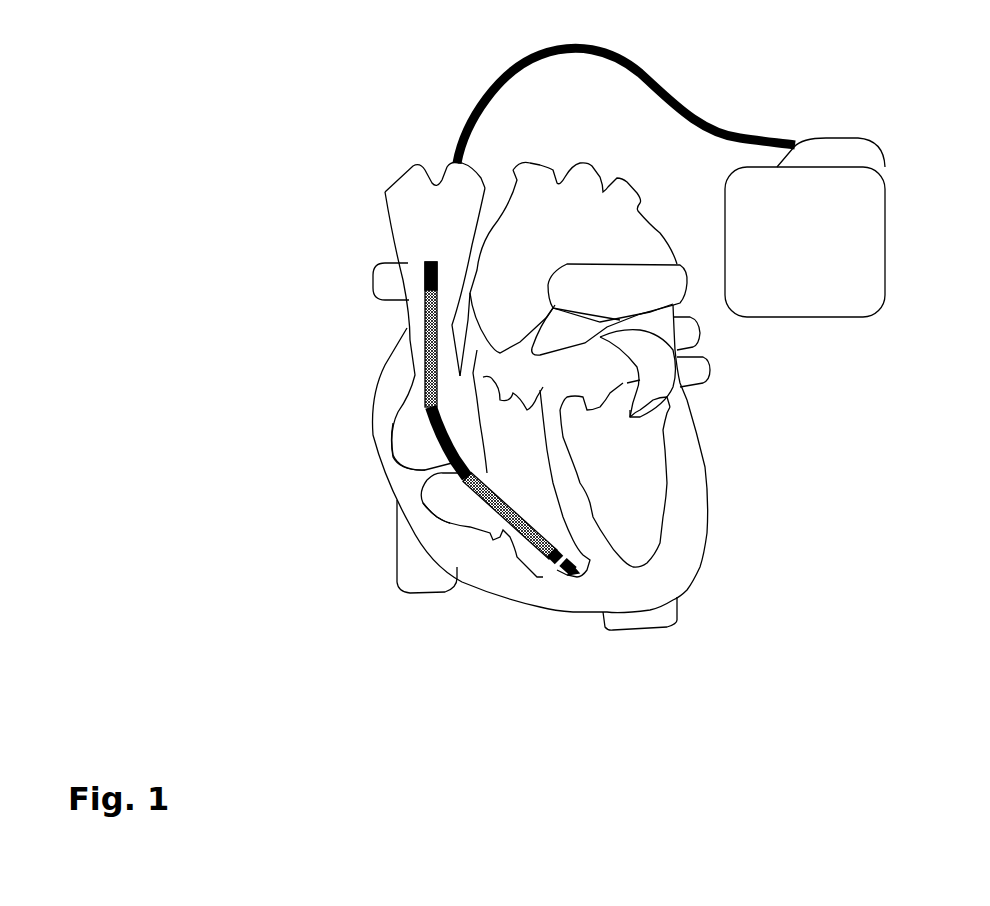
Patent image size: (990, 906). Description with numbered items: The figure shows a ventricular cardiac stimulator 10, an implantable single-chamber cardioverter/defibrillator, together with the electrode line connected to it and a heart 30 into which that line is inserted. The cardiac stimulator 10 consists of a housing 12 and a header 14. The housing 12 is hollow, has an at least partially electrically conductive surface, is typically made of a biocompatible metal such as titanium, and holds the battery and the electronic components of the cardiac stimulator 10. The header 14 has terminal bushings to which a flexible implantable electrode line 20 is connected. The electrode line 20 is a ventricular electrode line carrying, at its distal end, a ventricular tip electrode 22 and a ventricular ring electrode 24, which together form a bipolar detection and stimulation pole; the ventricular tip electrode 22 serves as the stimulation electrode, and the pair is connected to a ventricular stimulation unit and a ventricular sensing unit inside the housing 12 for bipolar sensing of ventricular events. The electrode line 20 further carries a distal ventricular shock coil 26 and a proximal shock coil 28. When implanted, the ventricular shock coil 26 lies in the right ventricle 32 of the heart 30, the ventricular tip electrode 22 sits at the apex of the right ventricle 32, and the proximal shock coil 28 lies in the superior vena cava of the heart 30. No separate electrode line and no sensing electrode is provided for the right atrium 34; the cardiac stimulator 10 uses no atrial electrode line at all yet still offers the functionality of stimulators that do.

The cardiac stimulator 10 is at (843, 273).
The housing 12 is at (858, 203).
The header 14 is at (832, 147).
The electrode line 20 is at (510, 68).
The ventricular tip electrode 22 is at (570, 573).
The ventricular ring electrode 24 is at (555, 560).
The ventricular shock coil 26 is at (500, 520).
The proximal shock coil 28 is at (430, 355).
The heart 30 is at (326, 218).
The right ventricle 32 is at (447, 497).
The right atrium 34 is at (407, 437).